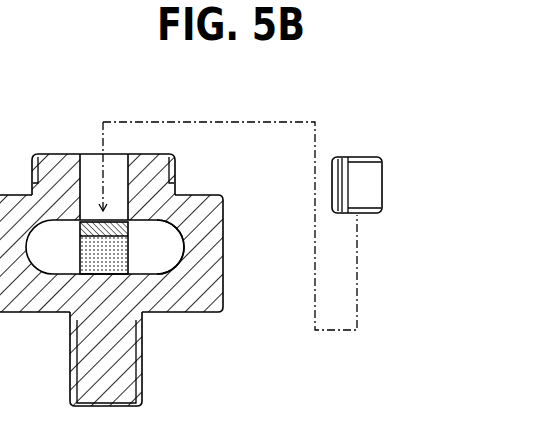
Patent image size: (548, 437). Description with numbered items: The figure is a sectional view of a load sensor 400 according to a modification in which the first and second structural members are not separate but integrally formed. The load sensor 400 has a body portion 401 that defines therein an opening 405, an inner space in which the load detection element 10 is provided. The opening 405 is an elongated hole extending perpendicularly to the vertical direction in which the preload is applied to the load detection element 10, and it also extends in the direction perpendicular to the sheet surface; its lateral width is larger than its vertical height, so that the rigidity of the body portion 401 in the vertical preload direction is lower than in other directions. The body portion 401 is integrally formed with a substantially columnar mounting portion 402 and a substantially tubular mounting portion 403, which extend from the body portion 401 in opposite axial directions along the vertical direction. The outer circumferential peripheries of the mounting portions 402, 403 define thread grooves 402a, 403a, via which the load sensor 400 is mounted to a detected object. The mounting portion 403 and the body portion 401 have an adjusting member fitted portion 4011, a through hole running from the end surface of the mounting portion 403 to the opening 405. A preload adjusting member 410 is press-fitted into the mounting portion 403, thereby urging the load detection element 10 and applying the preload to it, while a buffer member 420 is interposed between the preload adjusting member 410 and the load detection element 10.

The load sensor 400 is at (221, 328).
The body portion 401 is at (200, 283).
The mounting portion 402 is at (115, 385).
The thread groove 402a is at (142, 359).
The mounting portion 403 is at (148, 180).
The thread groove 403a is at (177, 172).
The adjusting member fitted portion 4011 is at (92, 167).
The opening 405 is at (157, 260).
The preload adjusting member 410 is at (357, 178).
The buffer member 420 is at (218, 208).
The load detection element 10 is at (123, 258).